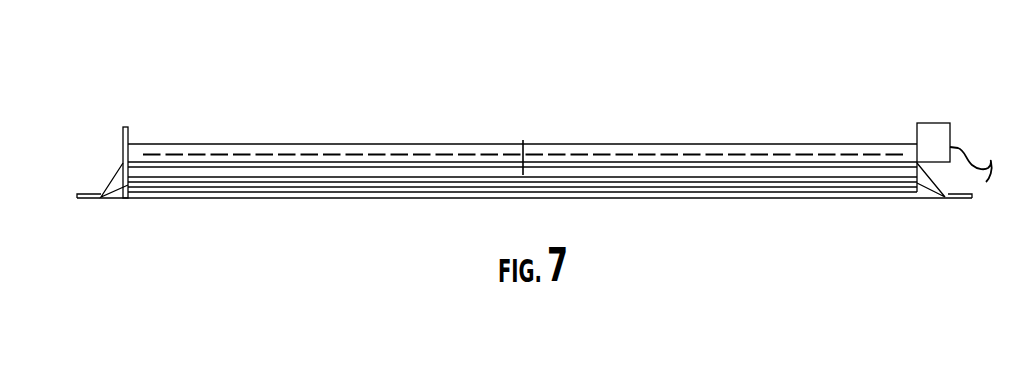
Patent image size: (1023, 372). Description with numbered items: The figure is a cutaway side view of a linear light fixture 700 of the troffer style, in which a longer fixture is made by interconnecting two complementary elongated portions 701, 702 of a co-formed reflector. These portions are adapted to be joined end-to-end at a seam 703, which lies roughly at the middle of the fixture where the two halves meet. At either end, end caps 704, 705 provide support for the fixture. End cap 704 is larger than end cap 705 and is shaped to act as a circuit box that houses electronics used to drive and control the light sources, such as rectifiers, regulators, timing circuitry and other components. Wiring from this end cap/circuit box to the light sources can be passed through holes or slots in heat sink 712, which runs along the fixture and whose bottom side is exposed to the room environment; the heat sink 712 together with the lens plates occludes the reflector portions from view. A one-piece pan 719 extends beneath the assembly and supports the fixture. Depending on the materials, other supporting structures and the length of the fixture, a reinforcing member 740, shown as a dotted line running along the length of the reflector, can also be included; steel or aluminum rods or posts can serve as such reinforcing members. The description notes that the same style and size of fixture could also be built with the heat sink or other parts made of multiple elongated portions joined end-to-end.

The linear light fixture 700 is at (792, 222).
The elongated portion of co-formed reflector 701 is at (523, 140).
The elongated portion of co-formed reflector 702 is at (917, 140).
The seam 703 is at (518, 148).
The end cap 704 is at (928, 123).
The end cap 705 is at (123, 148).
The heat sink 712 is at (713, 178).
The one-piece pan 719 is at (292, 200).
The reinforcing member 740 is at (196, 153).